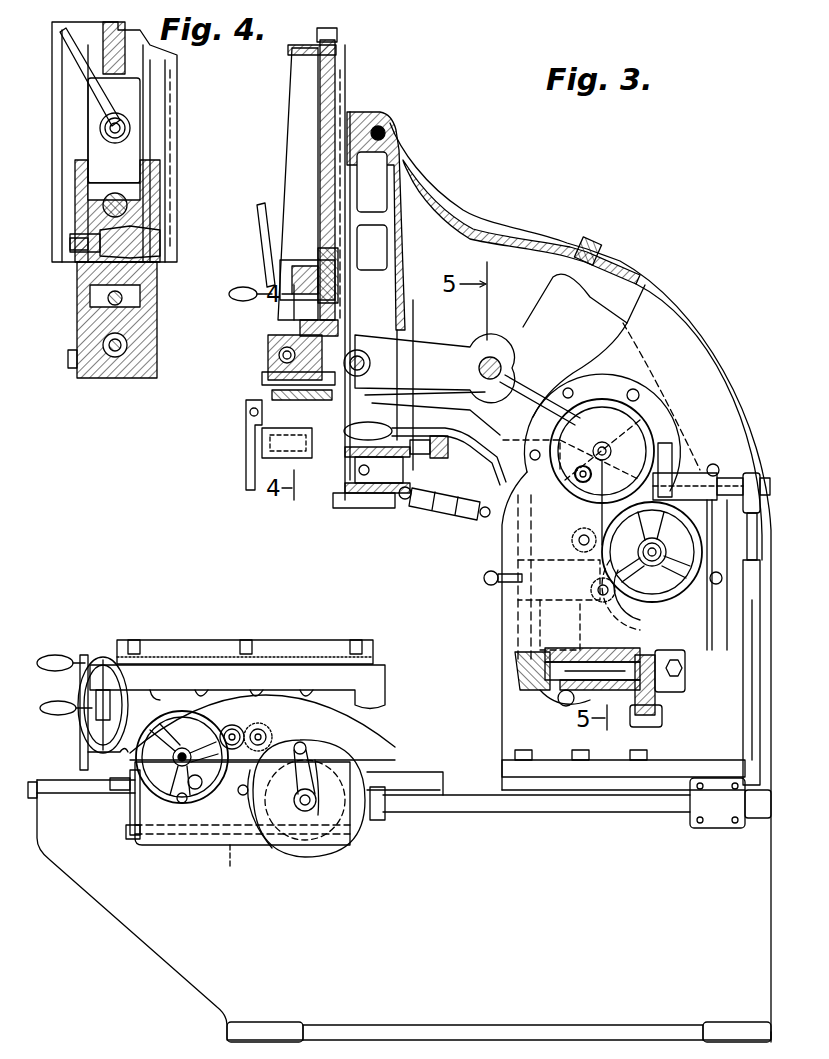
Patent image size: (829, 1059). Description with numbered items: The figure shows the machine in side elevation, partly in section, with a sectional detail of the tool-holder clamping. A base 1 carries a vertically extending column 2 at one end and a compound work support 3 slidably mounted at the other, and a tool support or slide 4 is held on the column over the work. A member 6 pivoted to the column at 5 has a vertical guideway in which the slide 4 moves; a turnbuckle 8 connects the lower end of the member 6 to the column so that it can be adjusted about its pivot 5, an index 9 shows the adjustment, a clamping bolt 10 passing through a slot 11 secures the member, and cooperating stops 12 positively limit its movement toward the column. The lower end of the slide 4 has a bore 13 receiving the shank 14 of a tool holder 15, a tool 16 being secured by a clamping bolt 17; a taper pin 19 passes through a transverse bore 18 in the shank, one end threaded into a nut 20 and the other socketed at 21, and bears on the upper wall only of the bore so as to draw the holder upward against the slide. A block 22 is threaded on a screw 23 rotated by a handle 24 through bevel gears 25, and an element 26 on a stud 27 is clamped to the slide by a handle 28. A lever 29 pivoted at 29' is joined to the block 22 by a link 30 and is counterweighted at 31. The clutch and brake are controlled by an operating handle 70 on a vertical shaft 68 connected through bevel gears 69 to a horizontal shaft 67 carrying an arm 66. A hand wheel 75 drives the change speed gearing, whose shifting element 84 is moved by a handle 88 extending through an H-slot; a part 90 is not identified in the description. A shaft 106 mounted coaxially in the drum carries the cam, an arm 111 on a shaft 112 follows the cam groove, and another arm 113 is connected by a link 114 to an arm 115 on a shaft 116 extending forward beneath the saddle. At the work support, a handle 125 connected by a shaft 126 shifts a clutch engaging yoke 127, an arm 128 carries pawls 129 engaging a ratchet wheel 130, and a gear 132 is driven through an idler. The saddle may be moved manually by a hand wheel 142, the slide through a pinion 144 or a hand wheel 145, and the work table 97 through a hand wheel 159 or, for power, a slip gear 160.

In FIG. 3, the base 1 is at (455, 1020).
In FIG. 3, the column 2 is at (667, 310).
In FIG. 3, the compound work support 3 is at (320, 730).
In FIG. 4, the tool support or slide 4 is at (170, 140).
In FIG. 3, the tool support or slide 4 is at (300, 136).
In FIG. 3, the pivot 5 is at (380, 127).
In FIG. 3, the member 6 is at (400, 246).
In FIG. 3, the turnbuckle 8 is at (445, 512).
In FIG. 3, the index 9 is at (350, 506).
In FIG. 3, the clamping bolt 10 is at (360, 470).
In FIG. 3, the slot 11 is at (423, 478).
In FIG. 3, the cooperating stops 12 is at (425, 456).
In FIG. 3, the bore 13 is at (272, 352).
In FIG. 3, the shank 14 is at (265, 373).
In FIG. 4, the tool holder 15 is at (90, 305).
In FIG. 3, the tool holder 15 is at (280, 390).
In FIG. 3, the tool 16 is at (248, 458).
In FIG. 4, the clamping bolt 17 is at (103, 343).
In FIG. 3, the clamping bolt 17 is at (248, 427).
In FIG. 4, the transverse bore 18 is at (108, 222).
In FIG. 4, the taper pin 19 is at (72, 250).
In FIG. 4, the nut 20 is at (72, 240).
In FIG. 4, the socket 21 is at (165, 236).
In FIG. 3, the block 22 is at (340, 258).
In FIG. 3, the screw 23 is at (338, 90).
In FIG. 3, the handle 24 is at (243, 292).
In FIG. 3, the bevel gears 25 is at (332, 340).
In FIG. 4, the element 26 is at (100, 145).
In FIG. 3, the element 26 is at (312, 260).
In FIG. 3, the stud 27 is at (302, 276).
In FIG. 3, the handle 28 is at (256, 210).
In FIG. 3, the lever 29 is at (516, 361).
In FIG. 3, the pivot 29' is at (515, 358).
In FIG. 3, the link 30 is at (352, 303).
In FIG. 3, the counterweight 31 is at (560, 282).
In FIG. 3, the arm 66 is at (652, 695).
In FIG. 3, the horizontal shaft 67 is at (592, 676).
In FIG. 3, the vertical shaft 68 is at (501, 608).
In FIG. 3, the bevel gears 69 is at (534, 688).
In FIG. 3, the operating handle 70 is at (452, 452).
In FIG. 3, the hand wheel 75 is at (700, 540).
In FIG. 3, the shifting element 84 is at (630, 603).
In FIG. 3, the handle 88 is at (484, 577).
In FIG. 3, the gear 90 is at (588, 553).
In FIG. 3, the work table 97 is at (170, 658).
In FIG. 3, the shaft 106 is at (602, 472).
In FIG. 3, the arm 111 is at (688, 445).
In FIG. 3, the shaft 112 is at (701, 462).
In FIG. 3, the arm 113 is at (744, 472).
In FIG. 3, the link 114 is at (748, 736).
In FIG. 3, the arm 115 is at (735, 812).
In FIG. 3, the shaft 116 is at (490, 806).
In FIG. 3, the handle 125 is at (130, 806).
In FIG. 3, the shaft 126 is at (242, 827).
In FIG. 3, the clutch engaging yoke 127 is at (320, 852).
In FIG. 3, the arm 128 is at (345, 772).
In FIG. 3, the pawls 129 is at (287, 728).
In FIG. 3, the ratchet wheel 130 is at (325, 772).
In FIG. 3, the gear 132 is at (213, 800).
In FIG. 3, the hand wheel 142 is at (92, 760).
In FIG. 3, the pinion 144 is at (226, 726).
In FIG. 3, the hand wheel 145 is at (100, 656).
In FIG. 3, the hand wheel 159 is at (58, 656).
In FIG. 3, the slip gear 160 is at (258, 723).